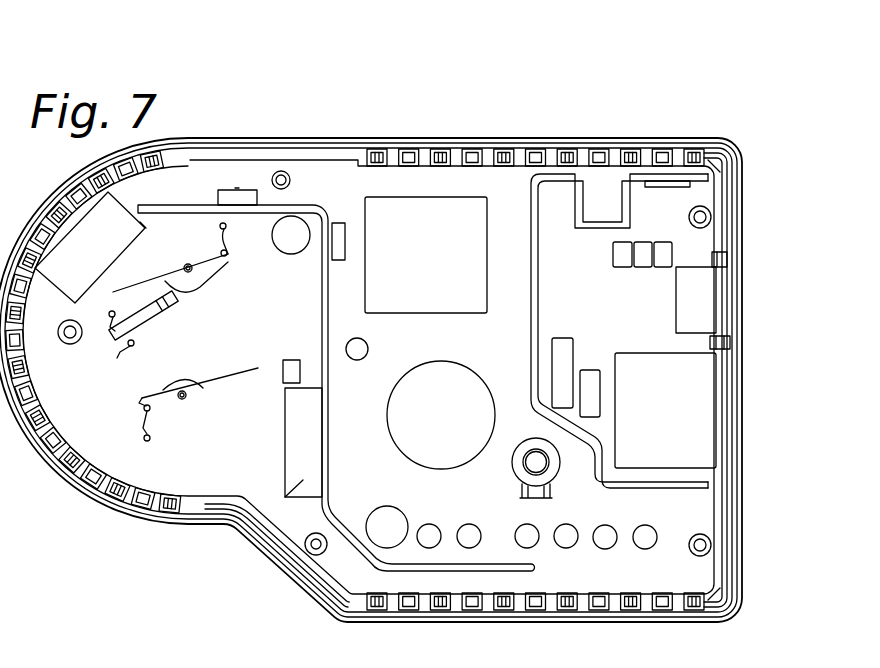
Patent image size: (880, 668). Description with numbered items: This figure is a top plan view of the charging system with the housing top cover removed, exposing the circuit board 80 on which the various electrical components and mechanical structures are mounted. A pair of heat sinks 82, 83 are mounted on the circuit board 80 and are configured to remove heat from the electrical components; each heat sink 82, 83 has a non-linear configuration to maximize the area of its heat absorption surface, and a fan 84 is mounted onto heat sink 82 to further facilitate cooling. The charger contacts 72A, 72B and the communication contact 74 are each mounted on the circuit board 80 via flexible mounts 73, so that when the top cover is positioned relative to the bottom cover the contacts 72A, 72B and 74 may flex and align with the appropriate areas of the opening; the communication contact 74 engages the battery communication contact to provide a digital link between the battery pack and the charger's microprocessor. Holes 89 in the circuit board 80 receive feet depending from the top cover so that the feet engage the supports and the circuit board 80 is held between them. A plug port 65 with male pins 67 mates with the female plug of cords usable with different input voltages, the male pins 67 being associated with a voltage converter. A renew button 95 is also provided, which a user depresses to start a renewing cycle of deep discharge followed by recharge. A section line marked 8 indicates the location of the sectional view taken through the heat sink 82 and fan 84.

The circuit board 80 is at (327, 170).
The heat sink 82 is at (194, 206).
The heat sink 83 is at (547, 176).
The fan 84 is at (302, 482).
The hole 89 is at (283, 172).
The plug port 65 is at (708, 318).
The male pin 67 is at (675, 290).
The renew button 95 is at (546, 466).
The charger contact 72A is at (188, 377).
The charger contact 72B is at (201, 282).
The flexible mount 73 is at (208, 257).
The communication contact 74 is at (166, 308).
The section line 8- 8 is at (350, 392).